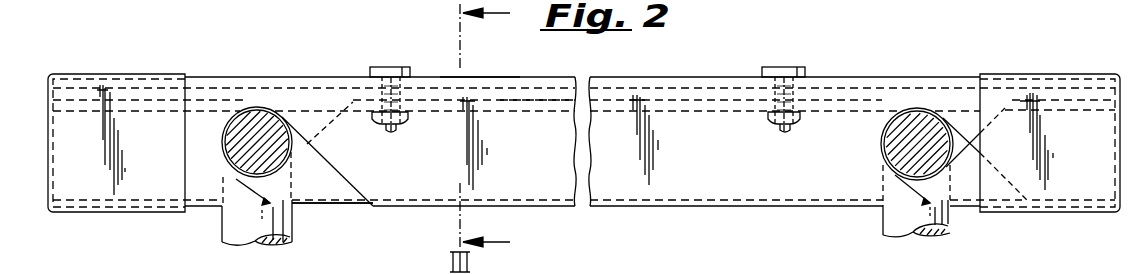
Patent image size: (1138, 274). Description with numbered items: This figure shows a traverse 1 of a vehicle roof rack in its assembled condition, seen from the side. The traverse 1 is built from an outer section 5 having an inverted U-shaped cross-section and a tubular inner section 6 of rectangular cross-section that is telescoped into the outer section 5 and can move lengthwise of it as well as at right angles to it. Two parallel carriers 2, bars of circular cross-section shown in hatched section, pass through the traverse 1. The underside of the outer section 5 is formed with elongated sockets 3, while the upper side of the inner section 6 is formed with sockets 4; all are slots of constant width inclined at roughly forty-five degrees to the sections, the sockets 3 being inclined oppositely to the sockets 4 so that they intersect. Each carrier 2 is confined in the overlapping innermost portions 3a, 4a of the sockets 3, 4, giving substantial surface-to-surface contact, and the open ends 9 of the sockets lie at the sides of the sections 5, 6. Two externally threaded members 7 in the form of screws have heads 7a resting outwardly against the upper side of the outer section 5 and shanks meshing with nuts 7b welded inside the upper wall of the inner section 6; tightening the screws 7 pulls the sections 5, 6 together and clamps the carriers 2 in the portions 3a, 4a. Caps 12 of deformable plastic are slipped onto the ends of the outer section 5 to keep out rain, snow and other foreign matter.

The traverse 1 is at (656, 73).
The carrier 2 is at (263, 113).
The socket 3 is at (325, 165).
The innermost portion of socket 3a is at (257, 107).
The socket 4 is at (333, 118).
The innermost portion of socket 4a is at (253, 178).
The outer section 5 is at (475, 77).
The inner section 6 is at (513, 100).
The externally threaded member 7 is at (380, 97).
The head 7a is at (403, 72).
The nut 7b is at (405, 119).
The open end 9 is at (321, 205).
The cap 12 is at (86, 69).